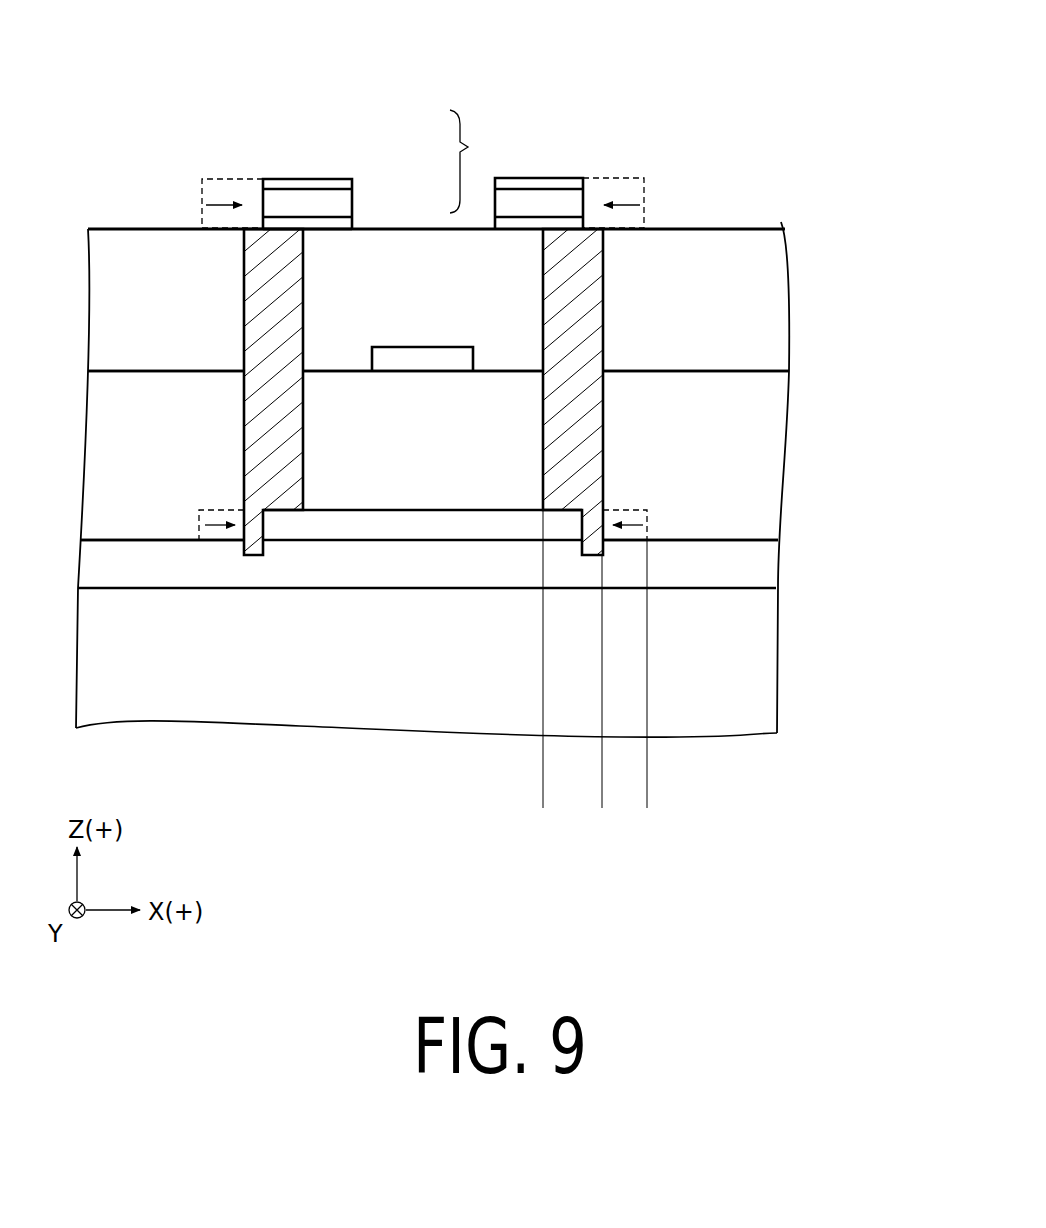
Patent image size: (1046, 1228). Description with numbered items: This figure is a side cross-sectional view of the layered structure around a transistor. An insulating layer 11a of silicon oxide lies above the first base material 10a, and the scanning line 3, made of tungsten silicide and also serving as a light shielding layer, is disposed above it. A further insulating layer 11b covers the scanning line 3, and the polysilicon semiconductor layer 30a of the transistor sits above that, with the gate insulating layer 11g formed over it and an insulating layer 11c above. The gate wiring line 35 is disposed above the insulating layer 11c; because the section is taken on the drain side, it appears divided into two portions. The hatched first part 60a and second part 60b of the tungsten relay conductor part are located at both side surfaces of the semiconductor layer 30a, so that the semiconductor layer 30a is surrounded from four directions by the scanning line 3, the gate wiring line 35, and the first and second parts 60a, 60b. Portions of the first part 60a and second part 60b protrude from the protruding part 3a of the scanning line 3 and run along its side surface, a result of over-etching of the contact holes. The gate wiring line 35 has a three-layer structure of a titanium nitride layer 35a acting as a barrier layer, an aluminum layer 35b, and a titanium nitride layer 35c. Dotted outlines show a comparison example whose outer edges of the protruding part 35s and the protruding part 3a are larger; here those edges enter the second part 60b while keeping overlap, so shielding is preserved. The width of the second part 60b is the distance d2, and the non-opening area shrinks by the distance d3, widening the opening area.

The gate wiring line 35 is at (425, 119).
The titanium nitride layer 35a is at (352, 223).
The aluminum layer 35b is at (352, 203).
The titanium nitride layer 35c is at (352, 180).
The protruding part of the gate wiring line 35s is at (568, 136).
The first part of the relay conductor part 60a is at (252, 318).
The second part of the relay conductor part 60b is at (604, 303).
The semiconductor layer 30a is at (433, 346).
The gate insulating layer 11g is at (519, 300).
The insulating layer 11c is at (767, 302).
The insulating layer 11b is at (768, 462).
The insulating layer 11a is at (762, 568).
The first base material 10a is at (762, 650).
The scanning line 3 is at (422, 614).
The protruding part of the scanning line 3a is at (430, 532).
The width of the second part d2 is at (600, 796).
The distance from the second part to the outer edge of the protruding part d3 is at (645, 796).